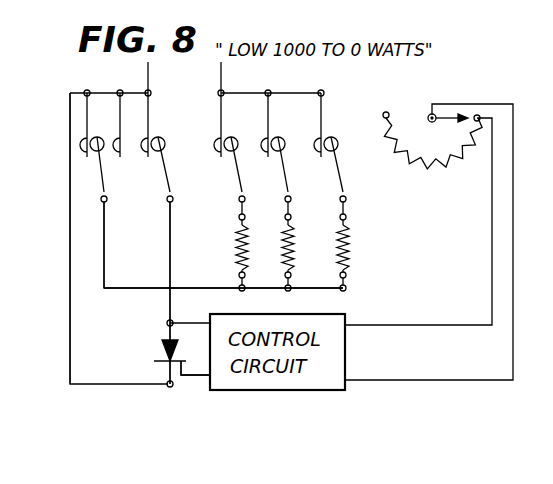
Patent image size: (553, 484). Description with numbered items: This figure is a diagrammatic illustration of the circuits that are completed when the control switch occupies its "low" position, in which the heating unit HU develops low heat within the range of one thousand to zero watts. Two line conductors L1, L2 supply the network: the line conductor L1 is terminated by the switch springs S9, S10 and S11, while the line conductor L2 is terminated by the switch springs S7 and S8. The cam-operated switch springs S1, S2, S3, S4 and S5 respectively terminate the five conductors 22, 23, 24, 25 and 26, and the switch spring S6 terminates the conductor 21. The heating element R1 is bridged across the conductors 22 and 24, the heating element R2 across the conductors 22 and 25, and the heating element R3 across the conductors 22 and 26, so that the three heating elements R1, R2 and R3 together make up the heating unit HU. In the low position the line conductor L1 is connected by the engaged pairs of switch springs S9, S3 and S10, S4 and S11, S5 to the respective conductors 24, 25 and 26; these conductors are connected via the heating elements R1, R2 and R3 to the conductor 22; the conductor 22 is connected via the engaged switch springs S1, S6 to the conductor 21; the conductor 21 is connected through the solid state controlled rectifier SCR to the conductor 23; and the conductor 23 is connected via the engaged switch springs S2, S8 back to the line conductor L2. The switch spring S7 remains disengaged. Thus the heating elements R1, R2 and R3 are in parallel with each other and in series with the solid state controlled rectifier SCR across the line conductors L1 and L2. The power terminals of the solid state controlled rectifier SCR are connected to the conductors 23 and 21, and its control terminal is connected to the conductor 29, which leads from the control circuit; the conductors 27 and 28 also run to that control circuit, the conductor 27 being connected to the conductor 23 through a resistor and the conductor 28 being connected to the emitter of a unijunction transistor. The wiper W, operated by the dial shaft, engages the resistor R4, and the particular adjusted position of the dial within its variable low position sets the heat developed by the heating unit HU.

The line conductor L1 is at (221, 78).
The line conductor L2 is at (148, 78).
The switch spring S1 is at (103, 184).
The switch spring S2 is at (169, 184).
The switch spring S3 is at (240, 184).
The switch spring S4 is at (286, 184).
The switch spring S5 is at (341, 184).
The switch spring S6 is at (94, 125).
The switch spring S7 is at (127, 125).
The switch spring S8 is at (156, 125).
The switch spring S9 is at (228, 125).
The switch spring S10 is at (280, 125).
The switch spring S11 is at (333, 125).
The conductor 21 is at (70, 236).
The conductor 22 is at (104, 232).
The conductor 23 is at (170, 232).
The conductor 24 is at (242, 209).
The conductor 25 is at (288, 209).
The conductor 26 is at (343, 209).
The conductor 27 is at (412, 324).
The conductor 28 is at (412, 381).
The conductor 29 is at (188, 376).
The heating element R1 is at (238, 256).
The heating element R2 is at (284, 256).
The heating element R3 is at (339, 256).
The resistor R4 is at (436, 168).
The heating unit HU is at (223, 301).
The wiper W is at (446, 118).
The solid state controlled rectifier SCR is at (163, 352).